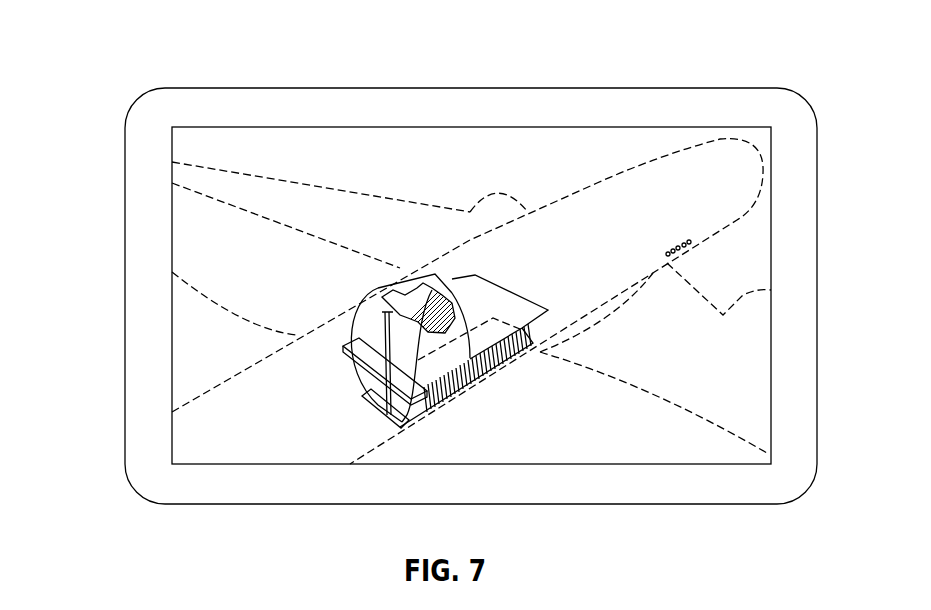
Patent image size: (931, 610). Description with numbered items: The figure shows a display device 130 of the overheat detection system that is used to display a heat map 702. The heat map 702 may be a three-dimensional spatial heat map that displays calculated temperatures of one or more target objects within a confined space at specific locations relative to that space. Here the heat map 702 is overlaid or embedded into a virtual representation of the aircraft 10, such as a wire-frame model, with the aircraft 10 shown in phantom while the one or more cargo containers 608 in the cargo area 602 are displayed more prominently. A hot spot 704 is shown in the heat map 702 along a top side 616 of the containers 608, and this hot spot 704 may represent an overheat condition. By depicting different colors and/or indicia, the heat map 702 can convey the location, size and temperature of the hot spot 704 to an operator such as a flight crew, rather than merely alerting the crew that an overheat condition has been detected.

The aircraft 10 is at (597, 183).
The display device 130 is at (197, 107).
The cargo area 602 is at (443, 276).
The cargo containers 608 is at (358, 328).
The top side 616 is at (400, 285).
The heat map 702 is at (290, 157).
The hot spot 704 is at (432, 299).